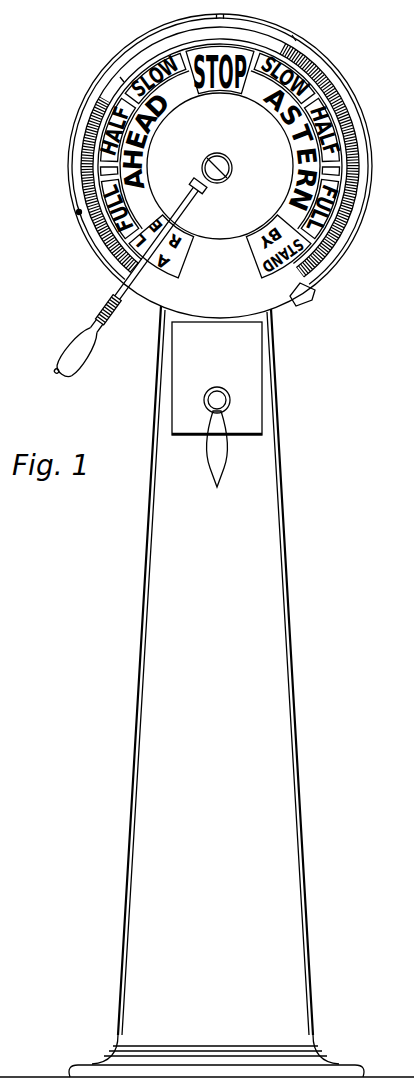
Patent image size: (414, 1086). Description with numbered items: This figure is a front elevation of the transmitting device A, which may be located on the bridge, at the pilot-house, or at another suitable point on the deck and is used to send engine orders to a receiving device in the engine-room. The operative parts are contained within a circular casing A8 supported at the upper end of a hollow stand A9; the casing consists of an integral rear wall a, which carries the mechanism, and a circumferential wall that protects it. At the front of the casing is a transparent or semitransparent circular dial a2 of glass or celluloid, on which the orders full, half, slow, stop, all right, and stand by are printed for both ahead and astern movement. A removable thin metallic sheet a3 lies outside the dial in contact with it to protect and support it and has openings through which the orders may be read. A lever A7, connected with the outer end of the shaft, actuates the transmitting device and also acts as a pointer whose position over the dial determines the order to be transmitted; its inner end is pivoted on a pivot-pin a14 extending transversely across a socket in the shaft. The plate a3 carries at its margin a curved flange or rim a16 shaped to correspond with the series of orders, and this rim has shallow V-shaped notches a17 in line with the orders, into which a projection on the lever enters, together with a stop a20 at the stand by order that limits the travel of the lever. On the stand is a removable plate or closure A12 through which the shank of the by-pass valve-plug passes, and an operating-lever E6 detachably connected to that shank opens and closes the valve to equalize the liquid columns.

The transmitting device A is at (220, 166).
The lever A7 is at (98, 333).
The circular casing A8 is at (351, 99).
The hollow stand A9 is at (207, 691).
The removable plate or closure A12 is at (248, 386).
The operating-lever E6 is at (213, 472).
The rear wall a is at (368, 160).
The circular dial a2 is at (290, 208).
The removable thin metallic sheet a3 is at (179, 255).
The pivot-pin a14 is at (133, 303).
The curved flange or rim a16 is at (364, 191).
The V-shaped notches a17 is at (78, 213).
The stop a20 is at (306, 296).